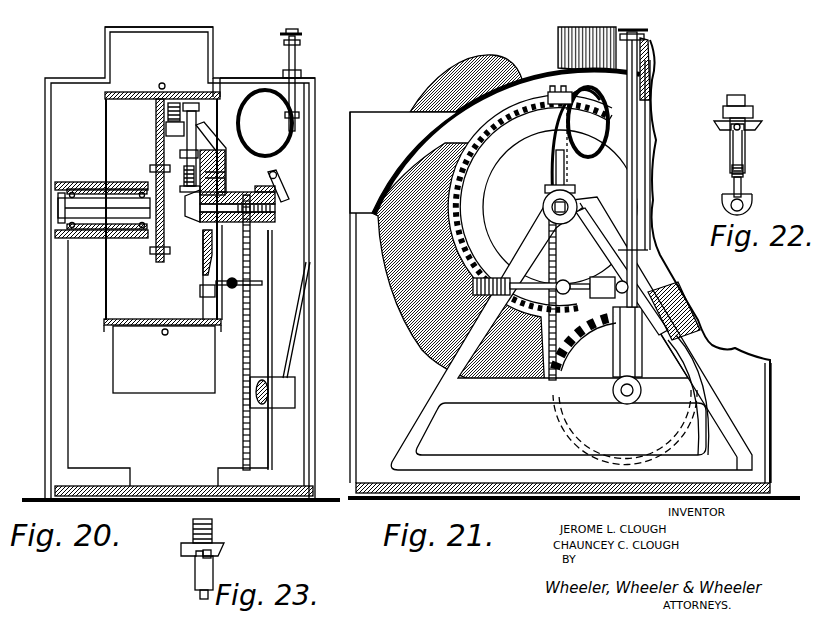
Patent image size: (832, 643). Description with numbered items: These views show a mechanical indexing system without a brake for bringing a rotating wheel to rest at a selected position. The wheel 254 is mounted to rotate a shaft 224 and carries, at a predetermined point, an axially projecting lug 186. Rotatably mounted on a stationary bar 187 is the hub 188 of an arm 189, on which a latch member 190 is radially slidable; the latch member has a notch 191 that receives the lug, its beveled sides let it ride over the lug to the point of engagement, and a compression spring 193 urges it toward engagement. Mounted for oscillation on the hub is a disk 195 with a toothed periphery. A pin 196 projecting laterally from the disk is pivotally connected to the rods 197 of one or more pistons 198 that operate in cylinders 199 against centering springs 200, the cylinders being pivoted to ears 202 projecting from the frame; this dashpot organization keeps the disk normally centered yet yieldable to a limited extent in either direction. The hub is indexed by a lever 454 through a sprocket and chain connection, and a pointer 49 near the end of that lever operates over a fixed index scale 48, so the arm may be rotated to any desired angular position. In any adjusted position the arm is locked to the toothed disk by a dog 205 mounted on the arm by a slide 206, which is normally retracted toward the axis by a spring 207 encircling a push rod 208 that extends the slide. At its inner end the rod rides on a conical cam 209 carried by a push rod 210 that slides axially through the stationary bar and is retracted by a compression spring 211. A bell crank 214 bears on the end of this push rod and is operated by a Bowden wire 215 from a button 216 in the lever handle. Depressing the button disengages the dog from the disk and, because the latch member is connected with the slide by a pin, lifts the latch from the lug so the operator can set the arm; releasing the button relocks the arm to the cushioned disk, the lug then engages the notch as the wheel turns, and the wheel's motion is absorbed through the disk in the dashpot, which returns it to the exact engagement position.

In FIG. 20, the fixed index scale 48 is at (258, 80).
In FIG. 20, the pointer 49 is at (272, 72).
In FIG. 20, the axially projecting lug 186 is at (186, 138).
In FIG. 20, the stationary bar 187 is at (190, 252).
In FIG. 20, the hub 188 is at (243, 178).
In FIG. 21, the hub 188 is at (548, 148).
In FIG. 20, the arm 189 is at (240, 162).
In FIG. 22, the arm 189 is at (748, 152).
In FIG. 23, the arm 189 is at (214, 572).
In FIG. 20, the latch member 190 is at (168, 118).
In FIG. 22, the latch member 190 is at (748, 123).
In FIG. 23, the latch member 190 is at (218, 544).
In FIG. 23, the notch 191 is at (214, 556).
In FIG. 20, the compression spring 193 is at (165, 112).
In FIG. 23, the compression spring 193 is at (195, 530).
In FIG. 20, the disk 195 is at (215, 125).
In FIG. 21, the disk 195 is at (562, 145).
In FIG. 20, the pin 196 is at (203, 296).
In FIG. 21, the pin 196 is at (564, 280).
In FIG. 21, the rods 197 is at (560, 305).
In FIG. 21, the pistons 198 is at (532, 296).
In FIG. 20, the cylinders 199 is at (222, 300).
In FIG. 21, the cylinders 199 is at (655, 278).
In FIG. 21, the centering springs 200 is at (440, 327).
In FIG. 20, the ears 202 is at (248, 283).
In FIG. 21, the ears 202 is at (645, 258).
In FIG. 20, the dog 205 is at (192, 103).
In FIG. 21, the dog 205 is at (558, 98).
In FIG. 22, the dog 205 is at (745, 110).
In FIG. 20, the slide 206 is at (184, 172).
In FIG. 22, the slide 206 is at (748, 142).
In FIG. 20, the spring 207 is at (182, 178).
In FIG. 22, the spring 207 is at (745, 172).
In FIG. 20, the push rod 208 is at (184, 190).
In FIG. 22, the push rod 208 is at (745, 192).
In FIG. 20, the conical cam 209 is at (150, 251).
In FIG. 22, the conical cam 209 is at (748, 202).
In FIG. 20, the push rod 210 is at (290, 205).
In FIG. 22, the push rod 210 is at (752, 212).
In FIG. 20, the compression spring 211 is at (277, 190).
In FIG. 20, the bell crank 214 is at (289, 200).
In FIG. 20, the Bowden wire 215 is at (287, 135).
In FIG. 21, the Bowden wire 215 is at (608, 105).
In FIG. 20, the button 216 is at (298, 34).
In FIG. 21, the button 216 is at (640, 32).
In FIG. 20, the shaft 224 is at (60, 207).
In FIG. 20, the wheel 254 is at (203, 93).
In FIG. 21, the wheel 254 is at (507, 88).
In FIG. 20, the lever 454 is at (296, 75).
In FIG. 21, the lever 454 is at (617, 190).